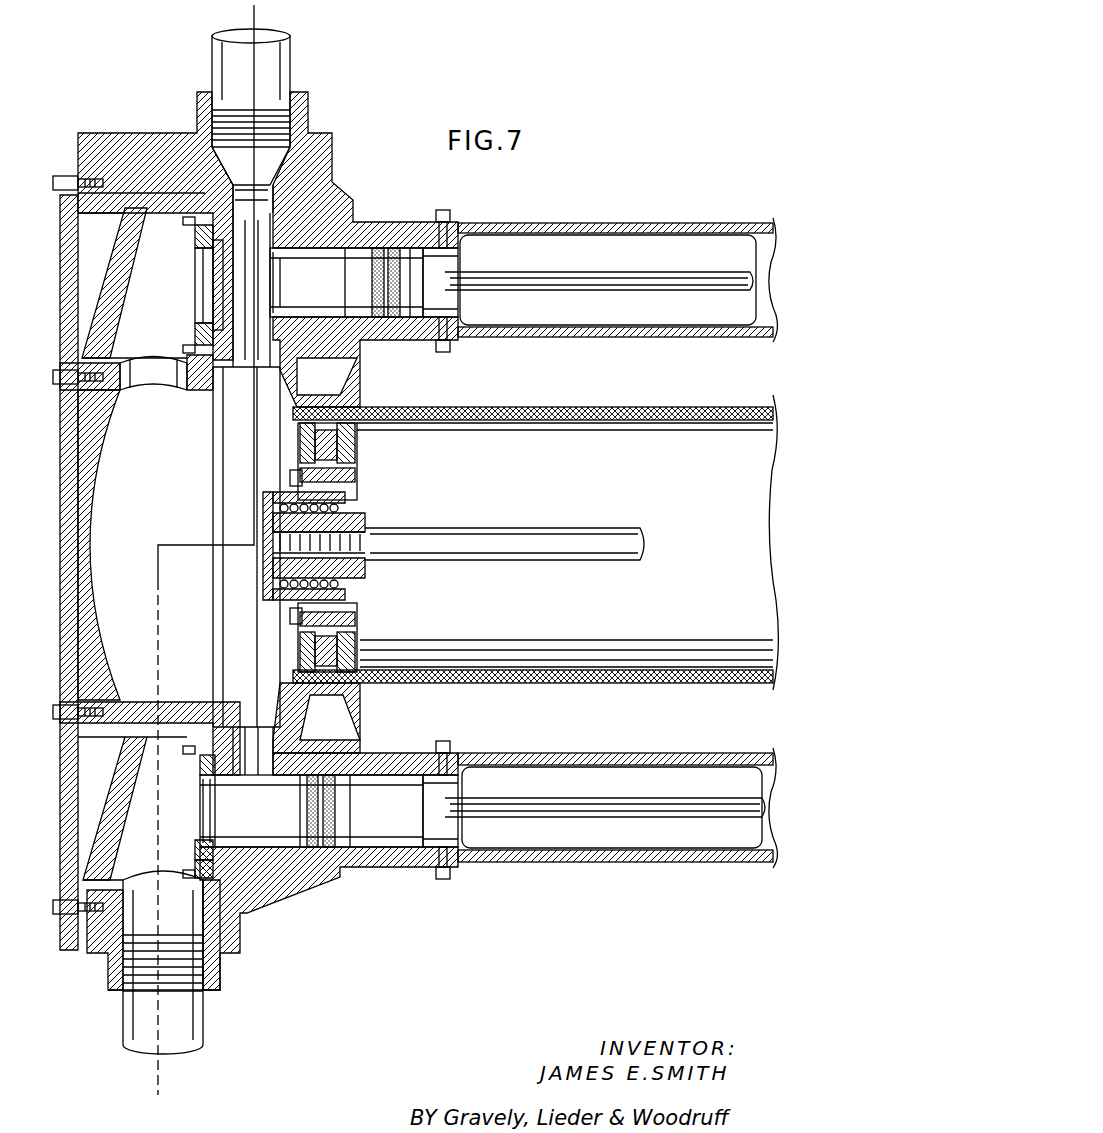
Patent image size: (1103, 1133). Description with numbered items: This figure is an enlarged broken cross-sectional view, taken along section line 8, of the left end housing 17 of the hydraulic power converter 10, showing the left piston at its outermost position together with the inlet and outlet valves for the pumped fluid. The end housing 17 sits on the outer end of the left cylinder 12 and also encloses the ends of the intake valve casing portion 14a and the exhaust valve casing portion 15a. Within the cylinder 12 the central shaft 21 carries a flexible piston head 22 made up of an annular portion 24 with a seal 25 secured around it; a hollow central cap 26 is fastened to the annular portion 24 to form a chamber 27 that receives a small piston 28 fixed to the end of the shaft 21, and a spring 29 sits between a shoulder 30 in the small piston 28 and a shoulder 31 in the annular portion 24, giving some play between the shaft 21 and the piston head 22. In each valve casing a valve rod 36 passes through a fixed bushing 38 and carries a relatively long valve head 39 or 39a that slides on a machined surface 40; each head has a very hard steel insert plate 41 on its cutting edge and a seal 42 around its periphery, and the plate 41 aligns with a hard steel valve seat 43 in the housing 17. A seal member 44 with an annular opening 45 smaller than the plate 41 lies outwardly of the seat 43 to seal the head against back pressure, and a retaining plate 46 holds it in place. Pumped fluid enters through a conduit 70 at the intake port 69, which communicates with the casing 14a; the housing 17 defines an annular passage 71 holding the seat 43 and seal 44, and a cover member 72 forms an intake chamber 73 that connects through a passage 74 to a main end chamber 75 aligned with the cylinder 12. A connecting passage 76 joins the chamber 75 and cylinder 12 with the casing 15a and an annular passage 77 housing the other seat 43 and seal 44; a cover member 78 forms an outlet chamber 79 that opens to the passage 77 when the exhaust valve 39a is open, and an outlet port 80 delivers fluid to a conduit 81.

The section line 8- 8 is at (244, 10).
The hydraulic power converter 10 is at (534, 220).
The cylinder 12 is at (672, 493).
The intake valve casing portion 14a is at (622, 222).
The exhaust valve casing portion 15a is at (583, 868).
The end housing 17 is at (158, 118).
The central shaft 21 is at (552, 512).
The flexible piston head 22 is at (250, 513).
The annular portion 24 is at (356, 473).
The seal 25 is at (360, 650).
The hollow central cap 26 is at (270, 500).
The chamber 27 is at (345, 588).
The small piston 28 is at (366, 570).
The spring 29 is at (345, 512).
The shoulder 30 is at (283, 602).
The shoulder 31 is at (366, 521).
The valve rod 36 is at (604, 258).
The fixed bushing 38 is at (445, 290).
The valve head 39 is at (340, 291).
The valve head 39a is at (280, 818).
The machined surface 40 is at (362, 247).
The steel insert plate 41 is at (276, 292).
The seal 42 is at (376, 296).
The valve seat 43 is at (212, 255).
The seal member 44 is at (205, 337).
The annular opening 45 is at (196, 288).
The retaining plate 46 is at (200, 228).
The intake port 69 is at (292, 137).
The conduit 70 is at (292, 55).
The annular passage 71 is at (210, 320).
The cover member 72 is at (120, 258).
The intake chamber 73 is at (166, 283).
The passage 74 is at (135, 375).
The main end chamber 75 is at (178, 481).
The connecting passage 76 is at (270, 740).
The annular passage 77 is at (213, 776).
The cover member 78 is at (116, 815).
The outlet chamber 79 is at (158, 836).
The outlet port 80 is at (125, 925).
The conduit 81 is at (122, 1026).